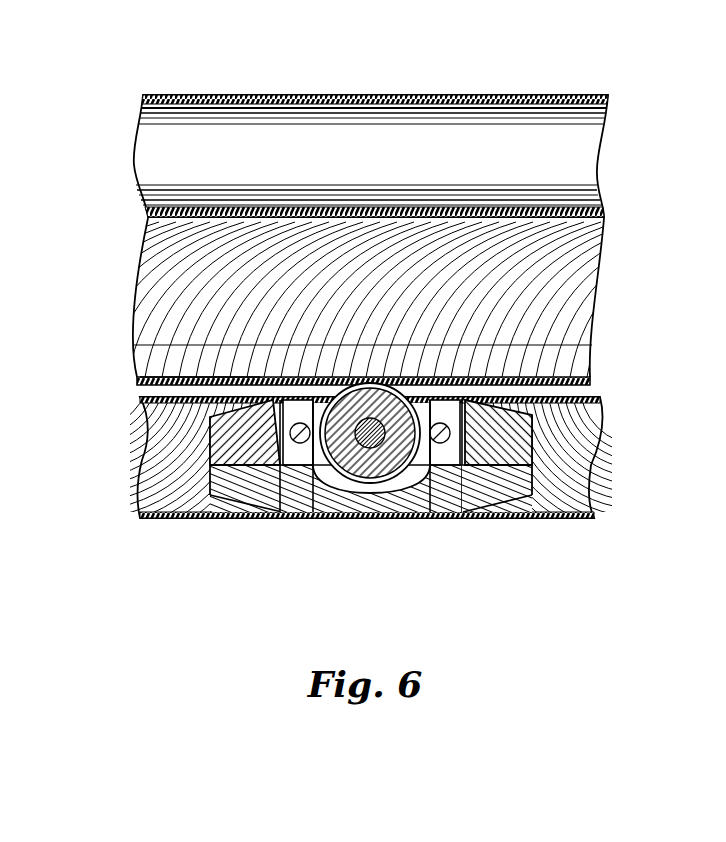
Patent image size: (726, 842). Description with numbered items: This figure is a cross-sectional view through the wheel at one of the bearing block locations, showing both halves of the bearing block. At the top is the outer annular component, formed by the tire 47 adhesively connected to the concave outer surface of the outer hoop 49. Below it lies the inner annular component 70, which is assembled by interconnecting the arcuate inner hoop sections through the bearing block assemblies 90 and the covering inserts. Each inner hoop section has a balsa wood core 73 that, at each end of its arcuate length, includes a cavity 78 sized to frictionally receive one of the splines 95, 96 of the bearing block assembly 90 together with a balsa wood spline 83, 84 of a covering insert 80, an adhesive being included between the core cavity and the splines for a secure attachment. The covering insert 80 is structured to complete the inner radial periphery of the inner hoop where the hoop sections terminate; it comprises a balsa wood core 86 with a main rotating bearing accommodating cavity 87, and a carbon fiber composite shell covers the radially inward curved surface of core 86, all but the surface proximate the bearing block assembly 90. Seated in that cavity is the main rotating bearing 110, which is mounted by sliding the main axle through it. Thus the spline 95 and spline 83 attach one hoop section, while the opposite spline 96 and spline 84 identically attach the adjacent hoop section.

The tire 47 is at (487, 118).
The outer hoop 49 is at (611, 293).
The bearing block assembly 90 is at (450, 404).
The cavity 78 is at (166, 377).
The inner annular component 70 is at (622, 463).
The balsa wood core 73 is at (158, 500).
The covering insert 80 is at (294, 528).
The balsa wood spline 83 is at (230, 497).
The balsa wood spline 84 is at (507, 490).
The balsa wood core 86 is at (338, 500).
The main rotating bearing accommodating cavity 87 is at (432, 512).
The spline 96 is at (220, 440).
The spline 95 is at (517, 432).
The main rotating bearing 110 is at (375, 445).